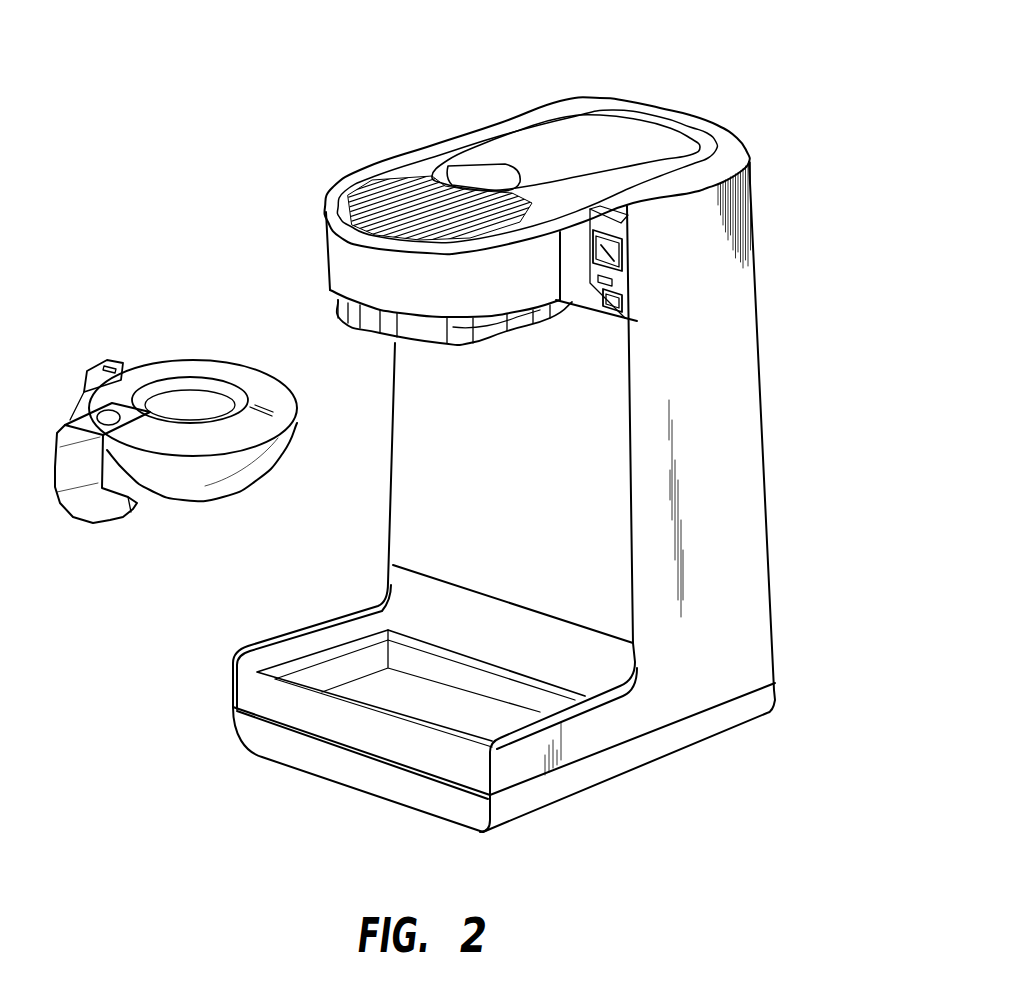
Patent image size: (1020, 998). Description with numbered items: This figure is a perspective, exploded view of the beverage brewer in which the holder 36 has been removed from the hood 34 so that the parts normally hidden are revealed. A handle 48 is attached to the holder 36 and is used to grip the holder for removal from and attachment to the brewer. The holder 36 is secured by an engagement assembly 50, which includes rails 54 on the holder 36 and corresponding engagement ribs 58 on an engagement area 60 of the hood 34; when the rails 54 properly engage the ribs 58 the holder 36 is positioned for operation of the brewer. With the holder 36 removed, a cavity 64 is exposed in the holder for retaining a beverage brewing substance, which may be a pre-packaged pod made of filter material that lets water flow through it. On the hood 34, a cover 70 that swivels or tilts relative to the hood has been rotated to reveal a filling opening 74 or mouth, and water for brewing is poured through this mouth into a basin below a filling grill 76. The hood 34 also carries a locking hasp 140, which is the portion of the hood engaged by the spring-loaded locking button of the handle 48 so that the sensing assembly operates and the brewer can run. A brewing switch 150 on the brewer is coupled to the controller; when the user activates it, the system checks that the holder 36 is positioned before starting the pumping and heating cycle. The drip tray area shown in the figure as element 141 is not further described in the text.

The hood 34 is at (340, 247).
The holder 36 is at (235, 512).
The handle 48 is at (82, 473).
The engagement assembly 50 is at (314, 311).
The rails 54 is at (102, 362).
The engagement ribs 58 is at (515, 342).
The engagement area 60 is at (355, 322).
The cavity 64 is at (173, 400).
The cover 70 is at (543, 135).
The filling opening 74 is at (368, 156).
The filling grill 76 is at (447, 178).
The locking hasp 140 is at (383, 327).
The drip tray 141 is at (375, 692).
The brewing switch 150 is at (607, 247).